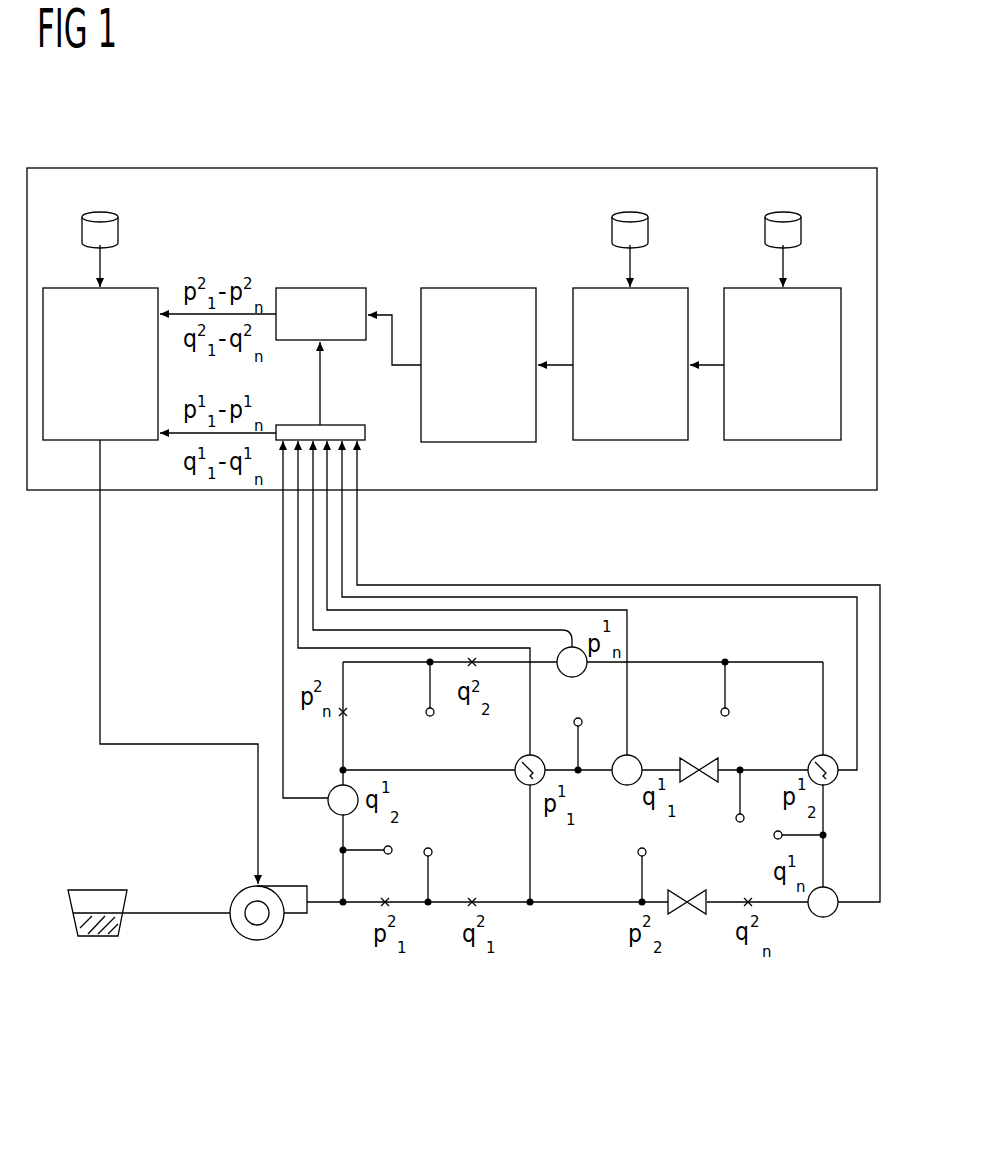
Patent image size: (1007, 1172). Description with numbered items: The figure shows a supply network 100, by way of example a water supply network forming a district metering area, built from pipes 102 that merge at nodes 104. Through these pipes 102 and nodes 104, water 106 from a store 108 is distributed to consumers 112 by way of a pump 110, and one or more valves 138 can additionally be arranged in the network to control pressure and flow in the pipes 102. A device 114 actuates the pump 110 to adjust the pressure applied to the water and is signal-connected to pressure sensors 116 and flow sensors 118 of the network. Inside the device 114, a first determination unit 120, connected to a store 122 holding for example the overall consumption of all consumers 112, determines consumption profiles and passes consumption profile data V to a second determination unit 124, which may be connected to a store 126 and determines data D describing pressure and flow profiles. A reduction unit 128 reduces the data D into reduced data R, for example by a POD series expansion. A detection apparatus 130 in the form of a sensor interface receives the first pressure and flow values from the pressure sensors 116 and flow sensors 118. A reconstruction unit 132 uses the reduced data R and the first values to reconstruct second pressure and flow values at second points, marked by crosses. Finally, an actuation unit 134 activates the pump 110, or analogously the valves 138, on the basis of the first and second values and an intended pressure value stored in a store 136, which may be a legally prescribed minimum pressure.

The supply network 100 is at (207, 980).
The pipes 102 is at (562, 762).
The nodes 104 is at (516, 758).
The water 106 is at (100, 940).
The store 108 is at (108, 888).
The pump 110 is at (255, 943).
The consumers 112 is at (393, 851).
The device 114 is at (545, 167).
The pressure sensors 116 is at (580, 649).
The flow sensors 118 is at (638, 760).
The first determination unit 120 is at (772, 441).
The store 122 is at (783, 211).
The second determination unit 124 is at (620, 441).
The store 126 is at (630, 211).
The reduction unit 128 is at (488, 443).
The detection apparatus 130 is at (366, 433).
The reconstruction unit 132 is at (326, 287).
The actuation unit 134 is at (60, 441).
The store 136 is at (100, 210).
The valves 138 is at (685, 758).